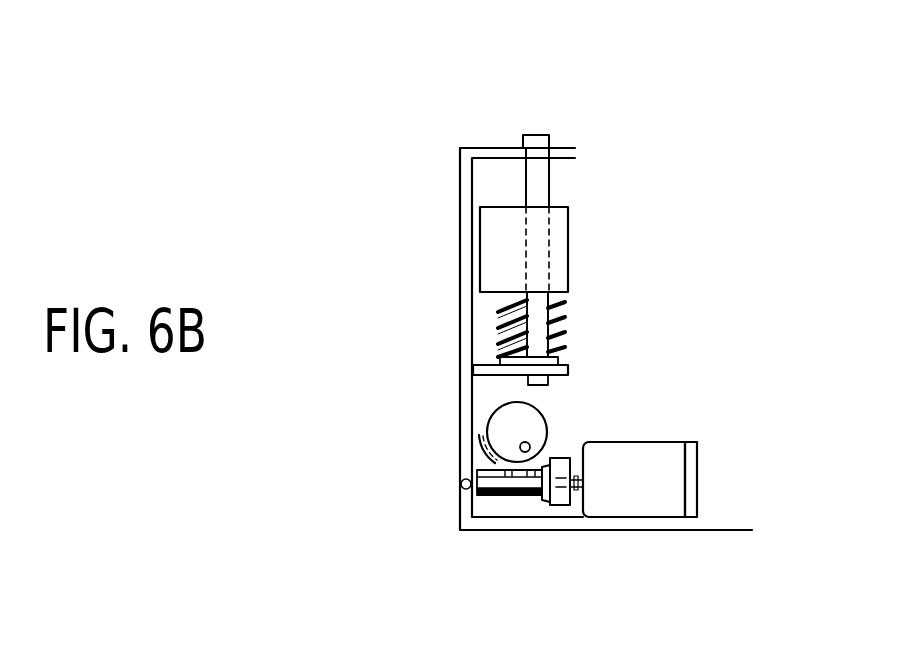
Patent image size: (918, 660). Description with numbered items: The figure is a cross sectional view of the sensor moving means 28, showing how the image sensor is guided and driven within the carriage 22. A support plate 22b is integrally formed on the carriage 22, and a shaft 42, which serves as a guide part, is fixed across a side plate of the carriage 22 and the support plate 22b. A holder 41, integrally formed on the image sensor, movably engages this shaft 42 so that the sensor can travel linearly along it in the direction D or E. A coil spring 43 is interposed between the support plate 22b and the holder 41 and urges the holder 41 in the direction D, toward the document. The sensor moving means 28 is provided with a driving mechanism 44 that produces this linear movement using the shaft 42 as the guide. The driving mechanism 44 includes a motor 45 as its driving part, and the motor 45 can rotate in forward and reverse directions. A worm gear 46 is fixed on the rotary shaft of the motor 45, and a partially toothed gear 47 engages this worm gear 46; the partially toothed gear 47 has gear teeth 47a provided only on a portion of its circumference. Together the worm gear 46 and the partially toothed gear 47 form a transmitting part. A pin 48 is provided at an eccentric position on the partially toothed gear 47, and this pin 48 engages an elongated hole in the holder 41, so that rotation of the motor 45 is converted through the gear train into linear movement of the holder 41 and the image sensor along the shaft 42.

The carriage 22 is at (485, 148).
The shaft 42 is at (543, 172).
The holder 41 is at (568, 236).
The coil spring 43 is at (565, 307).
The support plate 22b is at (568, 370).
The sensor moving means 28 is at (618, 420).
The partially toothed gear 47 is at (490, 412).
The pin 48 is at (520, 446).
The gear teeth 47a is at (478, 452).
The worm gear 46 is at (500, 496).
The driving mechanism 44 is at (557, 510).
The motor 45 is at (660, 509).